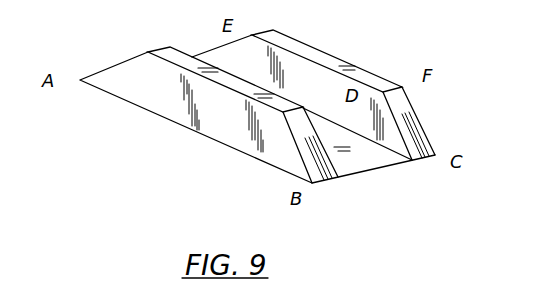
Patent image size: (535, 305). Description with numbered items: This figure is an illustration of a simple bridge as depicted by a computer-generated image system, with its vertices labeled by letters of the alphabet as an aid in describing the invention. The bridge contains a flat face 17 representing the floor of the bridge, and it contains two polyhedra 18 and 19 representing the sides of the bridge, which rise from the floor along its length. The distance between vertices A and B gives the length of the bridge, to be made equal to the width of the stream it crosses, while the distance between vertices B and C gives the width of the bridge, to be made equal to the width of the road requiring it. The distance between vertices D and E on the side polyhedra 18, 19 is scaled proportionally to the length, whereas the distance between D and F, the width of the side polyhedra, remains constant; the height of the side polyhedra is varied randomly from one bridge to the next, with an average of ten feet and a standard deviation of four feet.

The flat face 17 is at (368, 160).
The polyhedron 18 is at (235, 133).
The polyhedron 19 is at (386, 115).